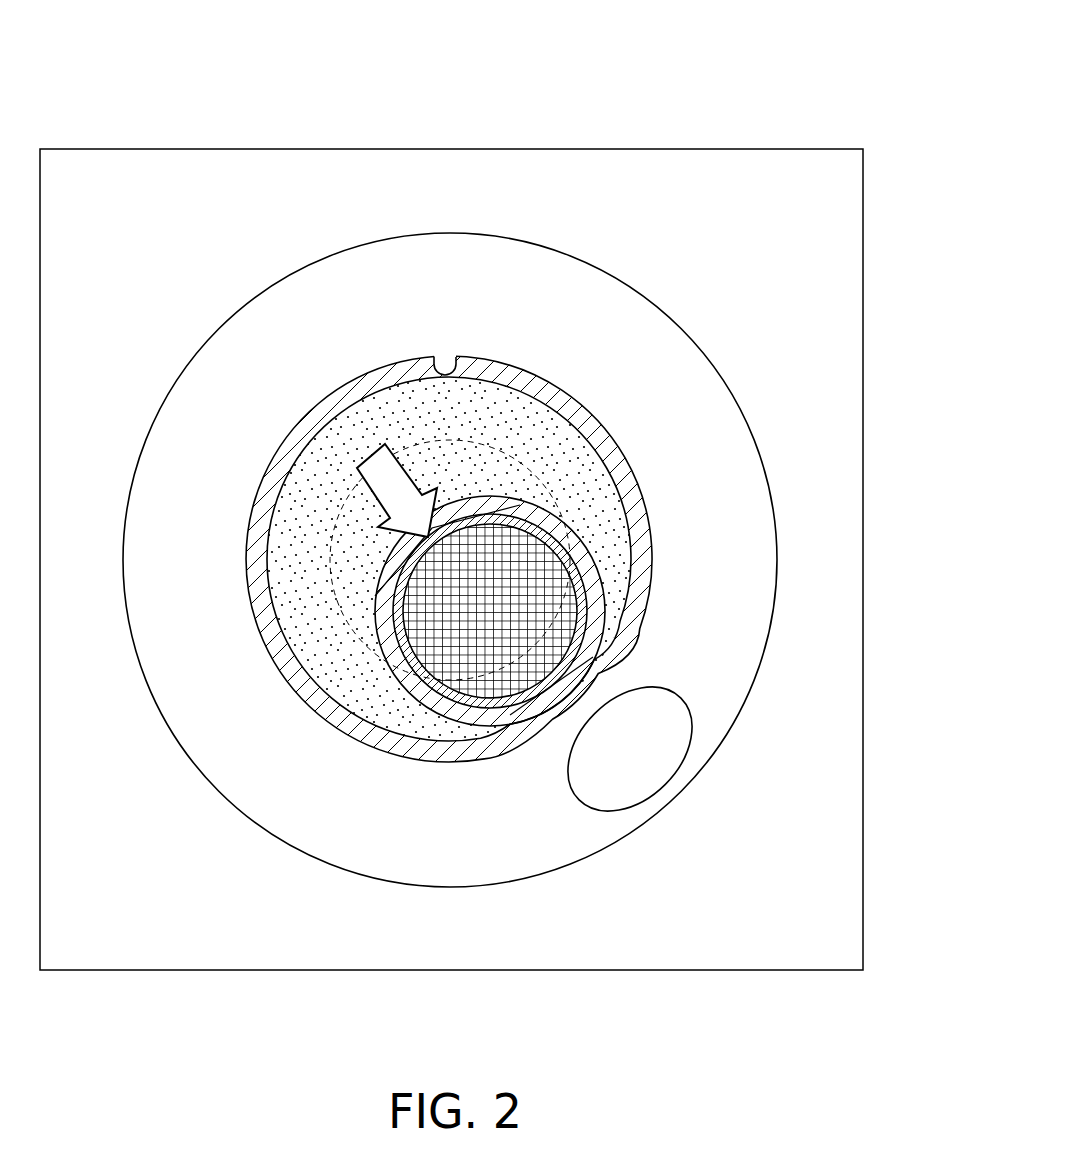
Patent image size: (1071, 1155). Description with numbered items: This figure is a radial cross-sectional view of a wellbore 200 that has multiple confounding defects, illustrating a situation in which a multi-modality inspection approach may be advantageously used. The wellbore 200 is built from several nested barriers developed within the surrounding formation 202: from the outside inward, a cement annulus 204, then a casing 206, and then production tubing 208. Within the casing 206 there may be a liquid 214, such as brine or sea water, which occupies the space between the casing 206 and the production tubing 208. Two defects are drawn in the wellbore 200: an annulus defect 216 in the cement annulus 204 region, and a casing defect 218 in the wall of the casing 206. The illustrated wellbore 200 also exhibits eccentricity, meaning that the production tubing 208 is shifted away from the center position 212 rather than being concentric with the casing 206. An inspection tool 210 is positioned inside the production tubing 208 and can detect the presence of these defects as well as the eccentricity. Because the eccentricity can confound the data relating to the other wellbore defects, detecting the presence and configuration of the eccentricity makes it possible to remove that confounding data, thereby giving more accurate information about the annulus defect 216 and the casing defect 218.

The wellbore 200 is at (786, 68).
The formation 202 is at (828, 291).
The cement annulus 204 is at (730, 522).
The casing 206 is at (636, 607).
The production tubing 208 is at (586, 657).
The inspection tool 210 is at (504, 686).
The center position 212 is at (500, 447).
The liquid 214 is at (283, 611).
The annulus defect 216 is at (645, 760).
The casing defect 218 is at (445, 362).